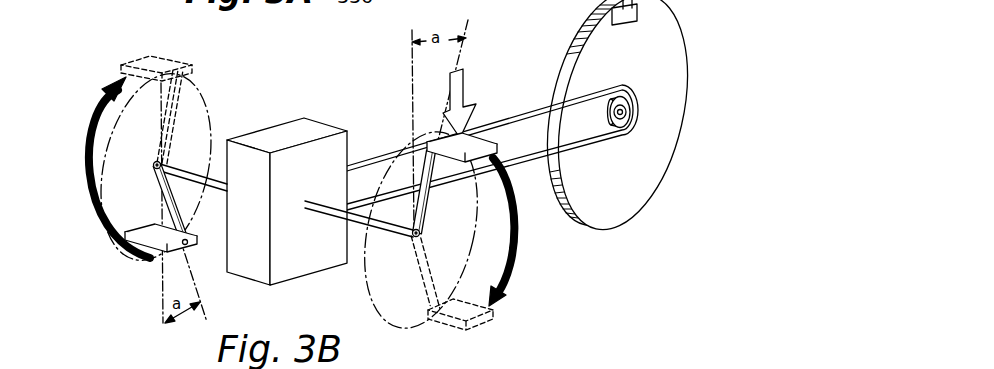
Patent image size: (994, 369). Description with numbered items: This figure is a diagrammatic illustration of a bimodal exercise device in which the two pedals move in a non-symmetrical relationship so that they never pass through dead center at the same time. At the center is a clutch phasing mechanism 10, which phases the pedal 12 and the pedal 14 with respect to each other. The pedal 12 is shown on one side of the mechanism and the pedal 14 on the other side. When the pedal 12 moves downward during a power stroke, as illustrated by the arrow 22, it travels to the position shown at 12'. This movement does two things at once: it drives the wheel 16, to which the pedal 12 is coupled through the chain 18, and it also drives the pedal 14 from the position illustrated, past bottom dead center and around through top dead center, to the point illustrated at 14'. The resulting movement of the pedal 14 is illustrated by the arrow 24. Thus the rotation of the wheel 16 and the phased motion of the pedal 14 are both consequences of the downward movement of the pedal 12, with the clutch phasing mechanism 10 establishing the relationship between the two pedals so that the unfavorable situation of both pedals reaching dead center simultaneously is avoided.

The clutch phasing mechanism 10 is at (289, 97).
The pedal 12 is at (461, 164).
The position of pedal 12' is at (450, 294).
The pedal 14 is at (315, 156).
The position of pedal 14' is at (162, 95).
The wheel 16 is at (662, 18).
The chain 18 is at (512, 117).
The arrow 22 is at (513, 253).
The arrow 24 is at (82, 182).